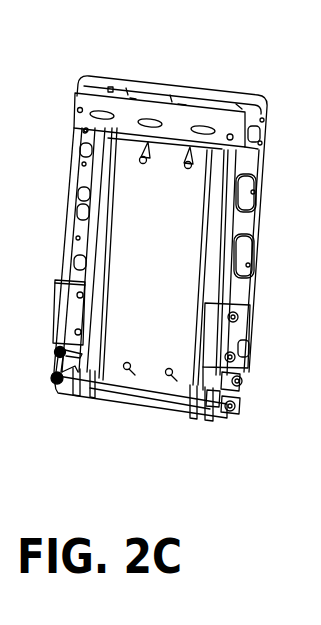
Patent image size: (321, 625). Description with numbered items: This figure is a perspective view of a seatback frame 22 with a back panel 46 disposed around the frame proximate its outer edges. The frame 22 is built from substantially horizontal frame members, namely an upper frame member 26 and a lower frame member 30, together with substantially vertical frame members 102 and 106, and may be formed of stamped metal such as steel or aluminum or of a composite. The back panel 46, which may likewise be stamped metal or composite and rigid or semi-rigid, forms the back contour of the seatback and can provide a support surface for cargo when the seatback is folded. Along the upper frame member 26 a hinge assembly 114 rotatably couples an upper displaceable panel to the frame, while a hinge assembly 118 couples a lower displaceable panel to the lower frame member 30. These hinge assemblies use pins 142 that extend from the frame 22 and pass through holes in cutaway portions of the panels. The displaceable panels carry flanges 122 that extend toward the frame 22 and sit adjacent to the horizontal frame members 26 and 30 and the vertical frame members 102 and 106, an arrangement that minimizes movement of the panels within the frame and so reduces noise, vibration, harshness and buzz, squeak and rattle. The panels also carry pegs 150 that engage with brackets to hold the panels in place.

The frame 22 is at (223, 115).
The upper frame member 26 is at (163, 120).
The lower frame member 30 is at (147, 387).
The back panel 46 is at (262, 173).
The frame member 102 is at (97, 235).
The frame member 106 is at (217, 220).
The hinge assembly 114 is at (196, 160).
The hinge assembly 118 is at (117, 368).
The pins 142 is at (184, 165).
The pegs 150 is at (262, 335).
The flanges 122 is at (262, 390).